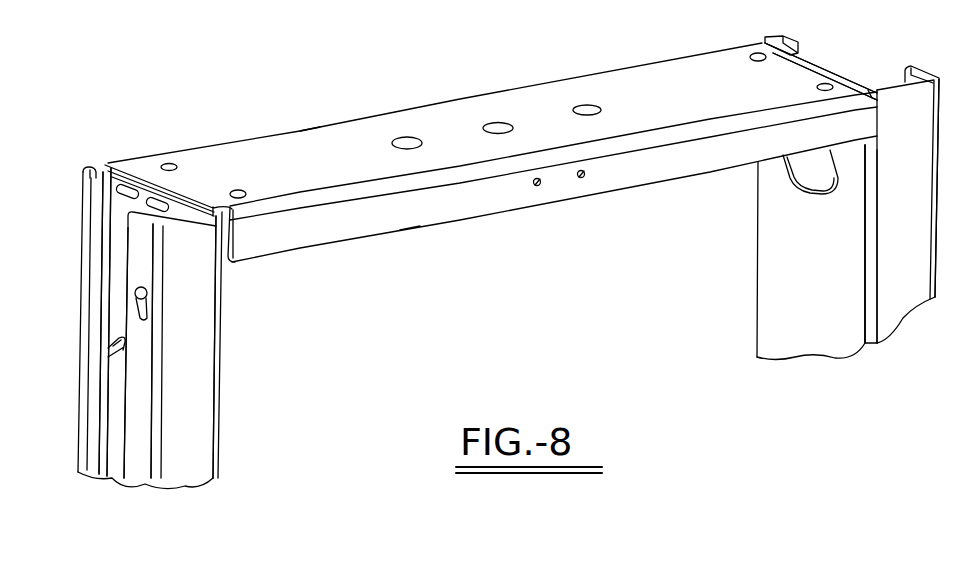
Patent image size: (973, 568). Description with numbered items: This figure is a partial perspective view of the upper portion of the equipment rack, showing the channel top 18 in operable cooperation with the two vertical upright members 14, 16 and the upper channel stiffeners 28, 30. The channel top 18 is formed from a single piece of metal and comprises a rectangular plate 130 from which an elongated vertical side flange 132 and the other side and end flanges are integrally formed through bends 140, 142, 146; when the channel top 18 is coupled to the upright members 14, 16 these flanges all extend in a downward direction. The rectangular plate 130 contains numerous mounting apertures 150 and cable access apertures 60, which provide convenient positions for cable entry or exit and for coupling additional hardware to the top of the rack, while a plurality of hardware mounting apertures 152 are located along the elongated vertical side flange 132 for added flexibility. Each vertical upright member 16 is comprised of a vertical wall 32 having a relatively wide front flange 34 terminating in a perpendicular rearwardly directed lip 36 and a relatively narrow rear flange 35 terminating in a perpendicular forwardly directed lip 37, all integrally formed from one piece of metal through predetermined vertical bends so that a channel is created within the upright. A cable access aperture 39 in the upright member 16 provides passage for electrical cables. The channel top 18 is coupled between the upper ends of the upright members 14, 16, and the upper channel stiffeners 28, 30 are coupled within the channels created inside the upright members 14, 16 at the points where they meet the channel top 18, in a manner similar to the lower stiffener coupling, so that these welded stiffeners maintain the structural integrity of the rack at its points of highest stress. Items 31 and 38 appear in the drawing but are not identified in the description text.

The vertical upright member 14 is at (218, 347).
The vertical upright member 16 is at (757, 336).
The channel top 18 is at (283, 128).
The upper channel stiffener 28 is at (117, 230).
The upper channel stiffener 30 is at (832, 67).
The post inner flange 31 is at (867, 318).
The vertical wall 32 is at (115, 395).
The front flange 34 is at (190, 292).
The rear flange 35 is at (100, 182).
The rearwardly directed lip 36 is at (137, 420).
The forwardly directed lip 37 is at (82, 361).
The post edge flange 38 is at (153, 398).
The cable access aperture 39 is at (807, 172).
The cable access aperture 60 is at (232, 192).
The rectangular plate 130 is at (518, 100).
The elongated vertical side flange 132 is at (408, 215).
The bend 140 is at (123, 166).
The bend 142 is at (138, 168).
The bend 146 is at (520, 162).
The mounting aperture 150 is at (497, 124).
The hardware mounting aperture 152 is at (581, 177).